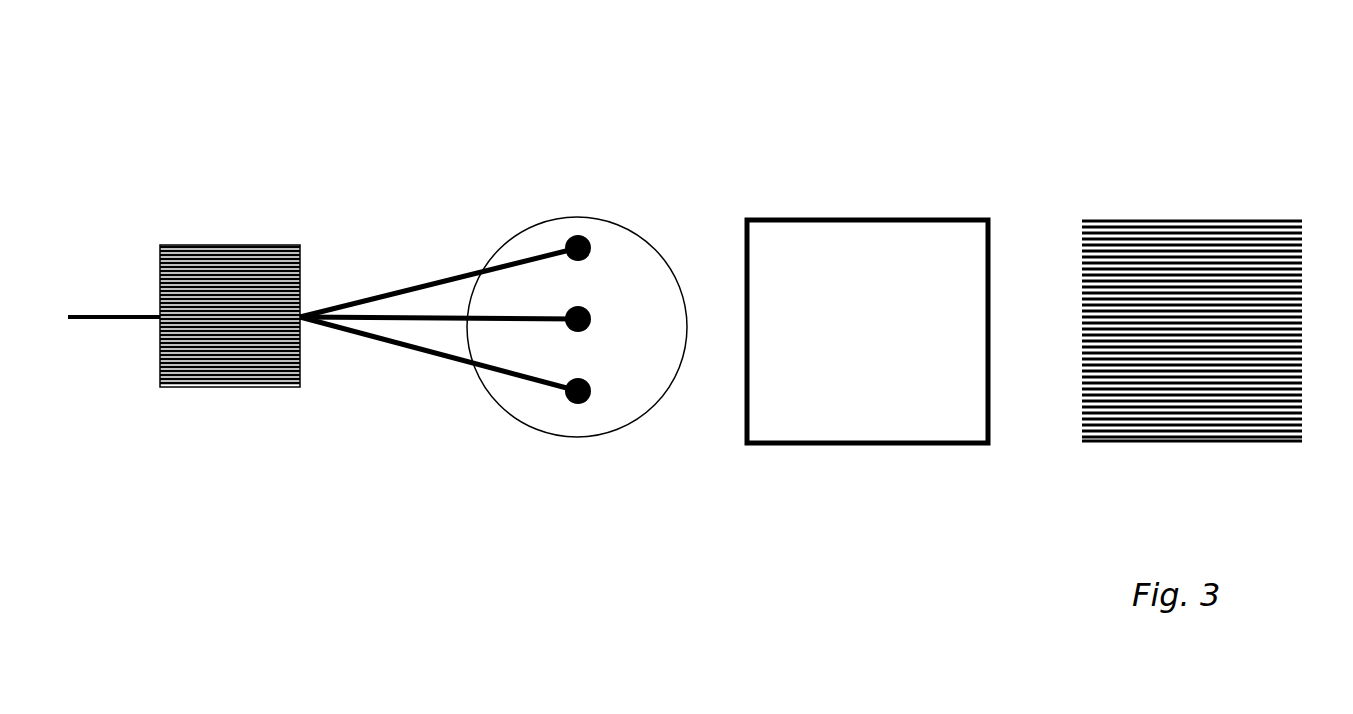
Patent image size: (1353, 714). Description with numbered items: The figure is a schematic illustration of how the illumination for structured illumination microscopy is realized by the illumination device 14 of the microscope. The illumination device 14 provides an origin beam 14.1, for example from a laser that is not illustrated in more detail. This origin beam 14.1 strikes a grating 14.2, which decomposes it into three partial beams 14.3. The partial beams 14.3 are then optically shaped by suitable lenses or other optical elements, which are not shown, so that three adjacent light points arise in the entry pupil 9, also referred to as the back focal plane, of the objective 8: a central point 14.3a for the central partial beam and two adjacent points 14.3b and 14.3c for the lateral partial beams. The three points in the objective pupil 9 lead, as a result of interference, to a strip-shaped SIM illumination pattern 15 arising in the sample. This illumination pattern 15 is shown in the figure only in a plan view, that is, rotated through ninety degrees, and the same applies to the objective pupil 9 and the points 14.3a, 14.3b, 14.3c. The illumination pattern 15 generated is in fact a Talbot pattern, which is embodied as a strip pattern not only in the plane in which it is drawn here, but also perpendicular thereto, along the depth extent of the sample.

The illumination device 14 is at (450, 115).
The origin beam 14.1 is at (82, 320).
The grating 14.2 is at (258, 388).
The partial beams 14.3 is at (384, 286).
The central point 14.3a is at (590, 312).
The adjacent point 14.3b is at (577, 404).
The adjacent point 14.3c is at (573, 238).
The entry pupil 9 is at (610, 218).
The objective 8 is at (892, 216).
The SIM illumination pattern 15 is at (1240, 218).